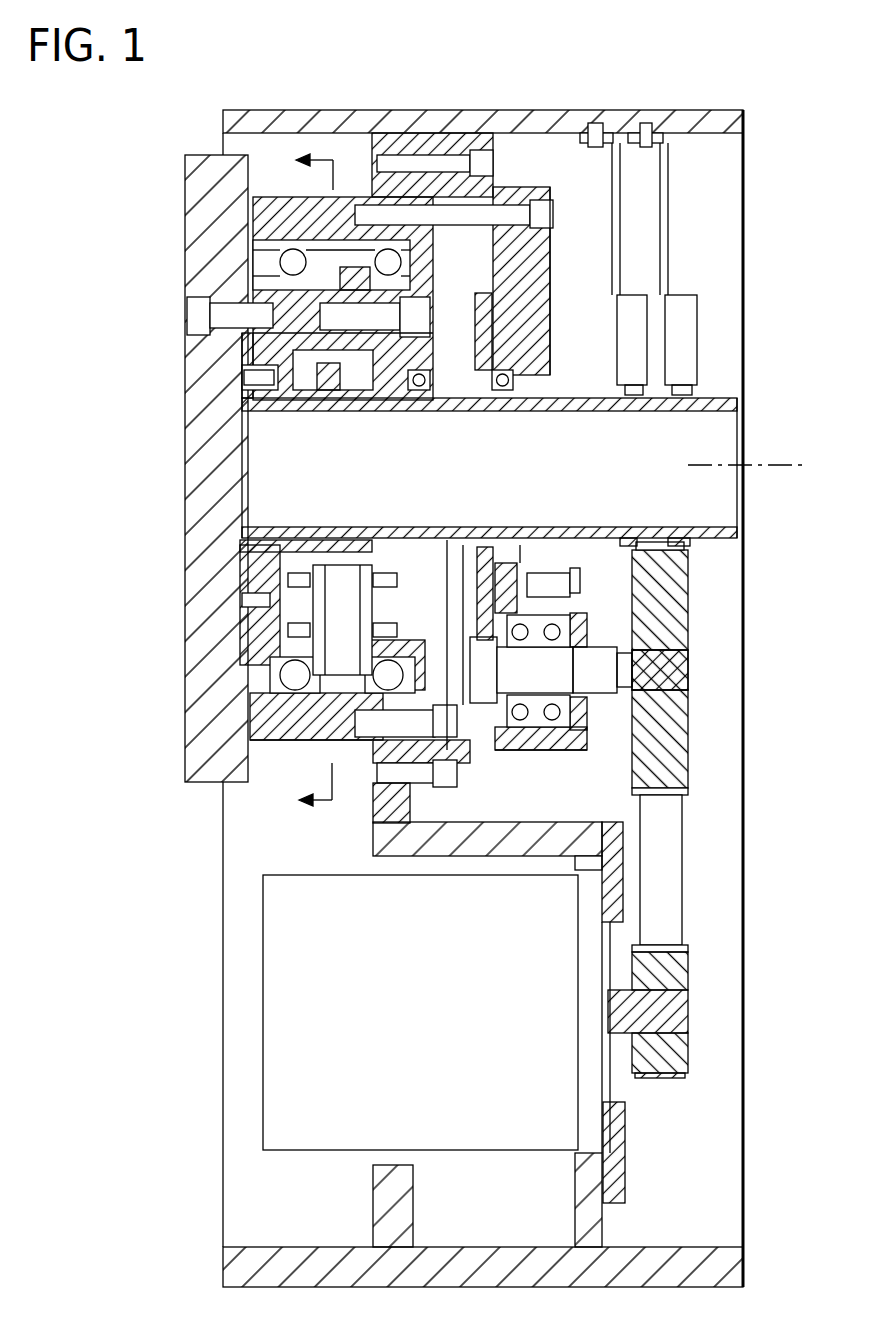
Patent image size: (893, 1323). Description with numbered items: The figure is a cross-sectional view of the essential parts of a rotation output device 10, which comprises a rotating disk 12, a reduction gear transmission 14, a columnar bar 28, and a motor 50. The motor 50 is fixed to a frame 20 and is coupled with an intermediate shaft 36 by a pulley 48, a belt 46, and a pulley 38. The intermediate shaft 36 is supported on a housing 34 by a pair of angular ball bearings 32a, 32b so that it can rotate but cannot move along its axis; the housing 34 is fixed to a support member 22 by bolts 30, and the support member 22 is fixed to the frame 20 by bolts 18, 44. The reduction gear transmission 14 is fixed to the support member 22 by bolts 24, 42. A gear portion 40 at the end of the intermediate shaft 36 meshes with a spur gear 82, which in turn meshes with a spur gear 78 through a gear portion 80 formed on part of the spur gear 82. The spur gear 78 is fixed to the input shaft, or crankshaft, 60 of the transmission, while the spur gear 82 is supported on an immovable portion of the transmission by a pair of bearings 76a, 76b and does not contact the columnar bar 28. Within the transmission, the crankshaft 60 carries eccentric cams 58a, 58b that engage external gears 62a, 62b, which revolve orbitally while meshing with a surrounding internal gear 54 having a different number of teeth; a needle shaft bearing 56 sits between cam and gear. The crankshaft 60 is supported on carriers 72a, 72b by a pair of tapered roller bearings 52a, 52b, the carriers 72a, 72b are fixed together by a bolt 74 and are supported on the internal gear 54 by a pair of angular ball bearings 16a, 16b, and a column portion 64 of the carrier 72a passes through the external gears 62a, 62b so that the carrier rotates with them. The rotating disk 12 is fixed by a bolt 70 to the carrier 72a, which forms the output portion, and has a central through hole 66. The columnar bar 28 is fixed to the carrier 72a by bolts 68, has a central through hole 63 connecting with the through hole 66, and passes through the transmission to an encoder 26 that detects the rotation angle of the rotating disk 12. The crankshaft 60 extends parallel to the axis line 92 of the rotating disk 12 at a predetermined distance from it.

The rotation output device 10 is at (753, 92).
The rotating disk 12 is at (190, 183).
The reduction gear transmission 14 is at (266, 158).
The angular ball bearing 16a is at (368, 248).
The angular ball bearing 16b is at (392, 245).
The bolt 18 is at (475, 160).
The frame 20 is at (516, 118).
The support member 22 is at (522, 190).
The bolt 24 is at (550, 200).
The encoder 26 is at (680, 340).
The columnar bar 28 is at (744, 404).
The bolt 30 is at (582, 541).
The angular ball bearing 32a is at (560, 680).
The angular ball bearing 32b is at (585, 630).
The housing 34 is at (580, 600).
The intermediate shaft 36 is at (605, 670).
The pulley 38 is at (666, 726).
The gear portion 40 is at (645, 780).
The bolt 42 is at (600, 735).
The bolt 44 is at (660, 935).
The belt 46 is at (660, 990).
The pulley 48 is at (660, 1060).
The motor 50 is at (330, 1052).
The tapered roller bearing 52a is at (305, 640).
The tapered roller bearing 52b is at (360, 773).
The internal gear 54 is at (317, 693).
The needle shaft bearing 56 is at (355, 702).
The eccentric cam 58a is at (285, 688).
The eccentric cam 58b is at (345, 715).
The input shaft (crankshaft) 60 is at (280, 612).
The external gear 62a is at (318, 562).
The external gear 62b is at (290, 602).
The through hole 63 is at (338, 527).
The column portion 64 is at (312, 350).
The through hole 66 is at (236, 392).
The bolt 68 is at (244, 372).
The bolt 70 is at (190, 322).
The carrier 72a is at (258, 272).
The carrier 72b is at (462, 272).
The bolt 74 is at (425, 320).
The bearing 76a is at (426, 396).
The bearing 76b is at (502, 396).
The spur gear 78 is at (450, 540).
The gear portion 80 is at (464, 545).
The spur gear 82 is at (520, 545).
The axis line 92 is at (790, 464).